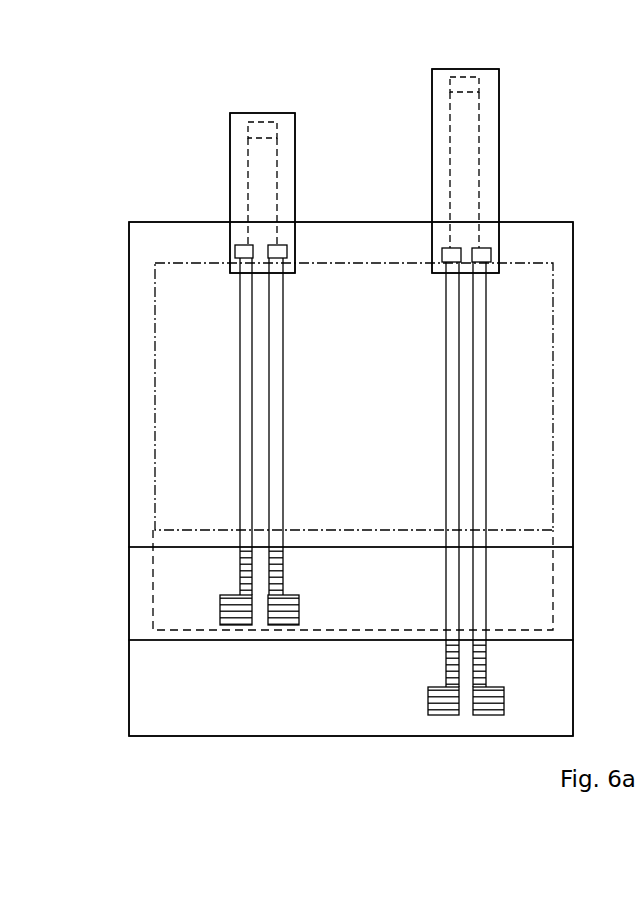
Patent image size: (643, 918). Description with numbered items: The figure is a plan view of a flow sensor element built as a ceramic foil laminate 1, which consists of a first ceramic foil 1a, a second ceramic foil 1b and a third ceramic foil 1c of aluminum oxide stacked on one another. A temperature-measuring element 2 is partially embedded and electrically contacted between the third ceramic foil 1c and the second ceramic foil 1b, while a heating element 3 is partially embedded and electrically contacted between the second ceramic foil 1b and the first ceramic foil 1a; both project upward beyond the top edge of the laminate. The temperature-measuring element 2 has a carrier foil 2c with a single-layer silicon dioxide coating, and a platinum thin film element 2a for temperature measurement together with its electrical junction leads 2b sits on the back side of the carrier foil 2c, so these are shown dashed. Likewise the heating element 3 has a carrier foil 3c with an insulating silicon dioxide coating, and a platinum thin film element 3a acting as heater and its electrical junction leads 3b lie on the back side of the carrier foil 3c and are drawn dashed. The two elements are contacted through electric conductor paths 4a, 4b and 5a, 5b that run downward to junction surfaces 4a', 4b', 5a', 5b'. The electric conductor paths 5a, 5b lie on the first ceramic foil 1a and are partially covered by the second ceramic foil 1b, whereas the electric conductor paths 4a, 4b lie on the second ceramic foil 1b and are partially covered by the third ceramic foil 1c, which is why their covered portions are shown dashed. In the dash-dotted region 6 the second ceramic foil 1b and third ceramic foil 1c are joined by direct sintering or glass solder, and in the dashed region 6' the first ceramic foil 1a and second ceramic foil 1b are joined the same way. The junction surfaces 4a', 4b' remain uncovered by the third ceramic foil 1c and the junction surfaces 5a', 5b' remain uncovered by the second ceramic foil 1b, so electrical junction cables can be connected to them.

The ceramic foil laminate 1 is at (573, 496).
The first ceramic foil 1a is at (158, 682).
The second ceramic foil 1b is at (145, 599).
The third ceramic foil 1c is at (143, 492).
The temperature-measuring element 2 is at (230, 142).
The platinum thin film element 2a is at (263, 132).
The first connector leads 2b is at (275, 203).
The carrier foil 2c is at (242, 208).
The heating element 3 is at (499, 113).
The platinum thin film element 3a is at (467, 83).
The electrical junction leads 3b is at (451, 200).
The carrier foil 3c is at (489, 207).
The electric conductor path 4a is at (159, 420).
The electric conductor path 4b is at (176, 420).
The junction surface 4a' is at (211, 668).
The junction surface 4b' is at (298, 668).
The electric conductor path 5a is at (551, 467).
The electric conductor path 5b is at (536, 467).
The junction surface 5a' is at (434, 718).
The junction surface 5b' is at (500, 718).
The region 6 is at (310, 396).
The region 6' is at (305, 580).